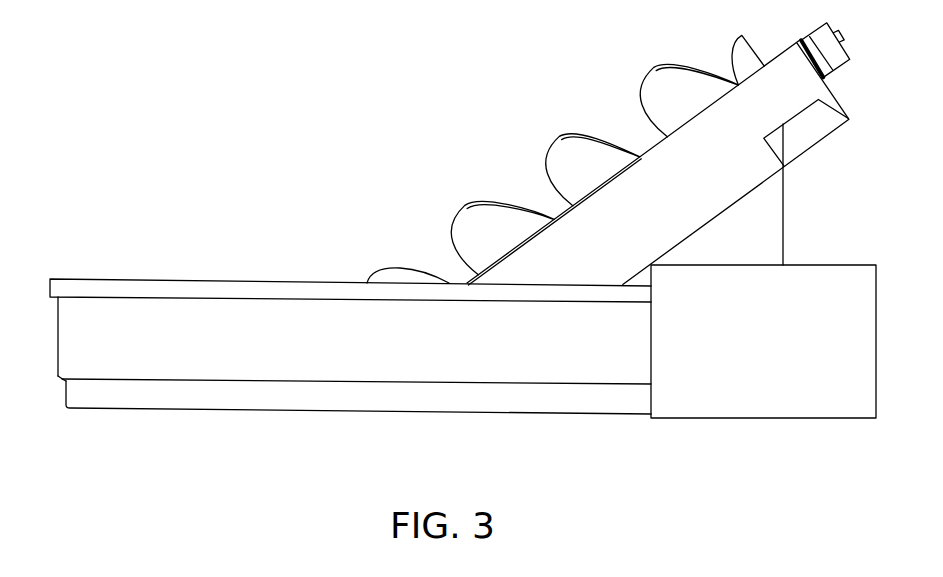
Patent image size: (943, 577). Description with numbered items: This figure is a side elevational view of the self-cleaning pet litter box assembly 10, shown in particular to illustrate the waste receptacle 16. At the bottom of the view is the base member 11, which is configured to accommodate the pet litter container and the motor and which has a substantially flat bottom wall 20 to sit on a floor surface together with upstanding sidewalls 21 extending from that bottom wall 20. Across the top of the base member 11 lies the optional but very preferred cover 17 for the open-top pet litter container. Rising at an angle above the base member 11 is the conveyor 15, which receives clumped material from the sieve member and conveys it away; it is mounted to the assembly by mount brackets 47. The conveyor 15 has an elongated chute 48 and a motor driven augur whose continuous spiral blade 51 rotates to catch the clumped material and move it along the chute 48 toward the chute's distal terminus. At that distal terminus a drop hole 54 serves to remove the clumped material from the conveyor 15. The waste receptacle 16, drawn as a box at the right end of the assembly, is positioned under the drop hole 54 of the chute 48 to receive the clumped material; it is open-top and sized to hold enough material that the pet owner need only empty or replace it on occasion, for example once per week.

The self-cleaning pet litter box assembly 10 is at (328, 178).
The base member 11 is at (172, 405).
The conveyor 15 is at (612, 112).
The waste receptacle 16 is at (772, 356).
The cover 17 is at (88, 284).
The flat bottom wall 20 is at (343, 414).
The upstanding sidewalls 21 is at (88, 355).
The mount brackets 47 is at (784, 216).
The elongated chute 48 is at (721, 208).
The continuous spiral blade 51 is at (463, 207).
The drop hole 54 is at (832, 118).